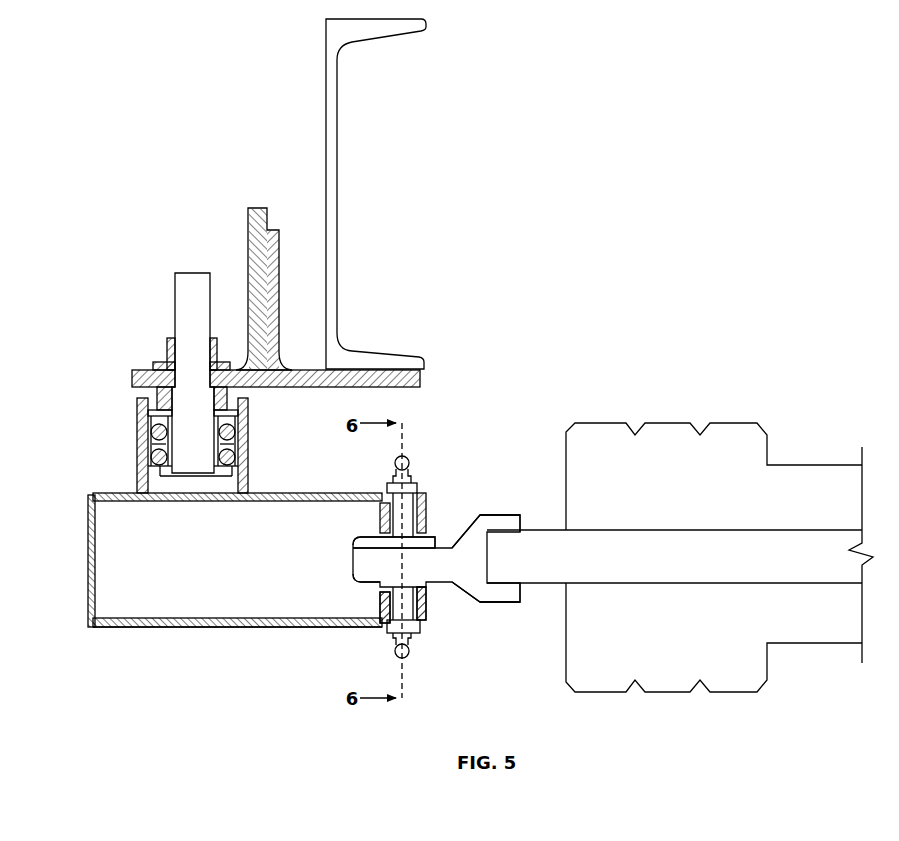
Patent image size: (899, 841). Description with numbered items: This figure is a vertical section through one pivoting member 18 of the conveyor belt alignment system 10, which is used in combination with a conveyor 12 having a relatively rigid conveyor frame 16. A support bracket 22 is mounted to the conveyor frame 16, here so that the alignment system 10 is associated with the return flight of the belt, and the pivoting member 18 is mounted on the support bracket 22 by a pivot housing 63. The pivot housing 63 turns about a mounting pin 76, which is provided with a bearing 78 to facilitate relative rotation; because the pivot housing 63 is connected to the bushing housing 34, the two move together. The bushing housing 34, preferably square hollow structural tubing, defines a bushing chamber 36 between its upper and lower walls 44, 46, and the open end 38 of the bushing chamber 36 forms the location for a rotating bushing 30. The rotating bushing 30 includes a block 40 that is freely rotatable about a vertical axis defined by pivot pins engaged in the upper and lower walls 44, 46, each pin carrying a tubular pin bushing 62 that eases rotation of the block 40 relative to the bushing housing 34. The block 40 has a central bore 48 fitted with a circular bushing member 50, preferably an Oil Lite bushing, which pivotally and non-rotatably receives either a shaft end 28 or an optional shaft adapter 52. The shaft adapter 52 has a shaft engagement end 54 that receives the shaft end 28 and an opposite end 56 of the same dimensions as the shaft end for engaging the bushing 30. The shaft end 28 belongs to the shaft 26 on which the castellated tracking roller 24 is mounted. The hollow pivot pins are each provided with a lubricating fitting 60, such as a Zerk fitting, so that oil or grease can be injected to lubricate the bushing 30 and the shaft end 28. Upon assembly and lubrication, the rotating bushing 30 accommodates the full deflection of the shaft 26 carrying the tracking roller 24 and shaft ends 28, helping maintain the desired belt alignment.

The conveyor belt alignment system 10 is at (93, 210).
The conveyor 12 is at (603, 135).
The conveyor frame 16 is at (338, 186).
The pivoting member 18 is at (58, 570).
The support bracket 22 is at (258, 204).
The castellated tracking roller 24 is at (610, 419).
The shaft 26 is at (757, 553).
The shaft end 28 is at (553, 568).
The rotating bushing 30 is at (434, 619).
The bushing housing 34 is at (185, 630).
The bushing chamber 36 is at (121, 618).
The open end 38 is at (382, 508).
The block 40 is at (382, 606).
The upper wall 44 is at (145, 502).
The lower wall 46 is at (208, 618).
The central bore 48 is at (427, 592).
The bushing member 50 is at (427, 530).
The shaft adapter 52 is at (455, 565).
The shaft engagement end 54 is at (507, 520).
The opposite end 56 is at (355, 560).
The lubricating fitting 60 is at (410, 462).
The tubular pin bushing 62 is at (422, 505).
The pivot housing 63 is at (248, 415).
The mounting pin 76 is at (184, 318).
The bearing 78 is at (240, 433).